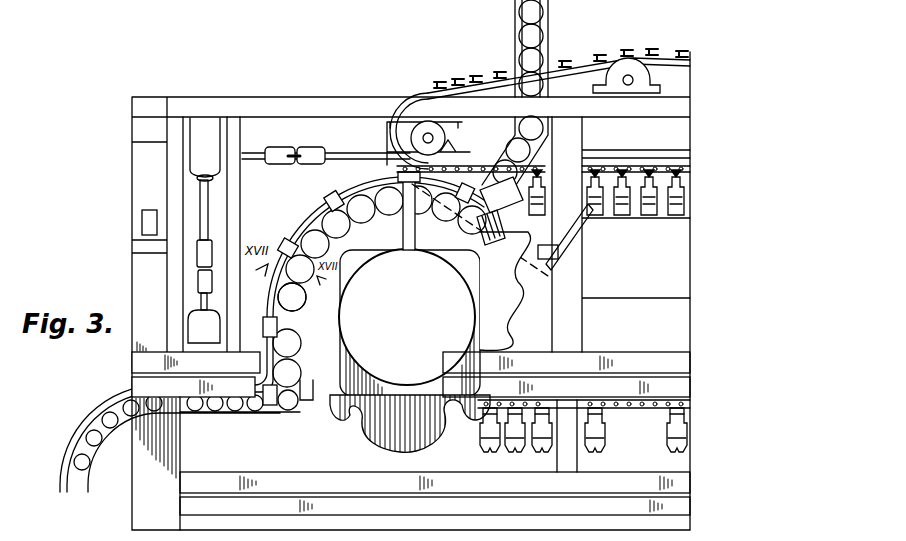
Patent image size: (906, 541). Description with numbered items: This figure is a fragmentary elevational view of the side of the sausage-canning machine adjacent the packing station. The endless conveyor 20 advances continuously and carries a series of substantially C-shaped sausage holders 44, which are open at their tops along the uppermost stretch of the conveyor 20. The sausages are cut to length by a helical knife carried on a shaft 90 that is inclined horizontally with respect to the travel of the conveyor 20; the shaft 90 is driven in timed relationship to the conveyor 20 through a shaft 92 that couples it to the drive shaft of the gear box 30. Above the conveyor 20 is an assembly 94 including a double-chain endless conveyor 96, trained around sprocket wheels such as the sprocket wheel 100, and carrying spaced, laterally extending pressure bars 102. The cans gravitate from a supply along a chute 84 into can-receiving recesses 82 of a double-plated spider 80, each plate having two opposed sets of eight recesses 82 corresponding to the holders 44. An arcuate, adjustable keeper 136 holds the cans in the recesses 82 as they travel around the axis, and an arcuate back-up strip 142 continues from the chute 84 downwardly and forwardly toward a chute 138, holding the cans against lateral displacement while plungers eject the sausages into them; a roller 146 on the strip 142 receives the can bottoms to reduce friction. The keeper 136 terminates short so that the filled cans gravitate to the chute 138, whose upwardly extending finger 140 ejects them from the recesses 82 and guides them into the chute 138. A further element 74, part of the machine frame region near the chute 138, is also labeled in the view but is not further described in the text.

The endless conveyor 20 is at (610, 168).
The gear box 30 is at (463, 306).
The sausage holder 44 is at (636, 220).
The column 74 is at (193, 459).
The double-plated spider 80 is at (386, 441).
The can-receiving recess 82 is at (514, 291).
The chute 84 is at (515, 40).
The shaft 90 is at (345, 152).
The shaft 92 is at (228, 212).
The assembly 94 is at (638, 52).
The double-chain endless conveyor 96 is at (562, 75).
The sprocket wheel 100 is at (474, 136).
The pressure bar 102 is at (432, 84).
The keeper 136 is at (270, 325).
The chute 138 is at (112, 468).
The finger 140 is at (335, 350).
The back-up strip 142 is at (400, 211).
The roller 146 is at (306, 298).